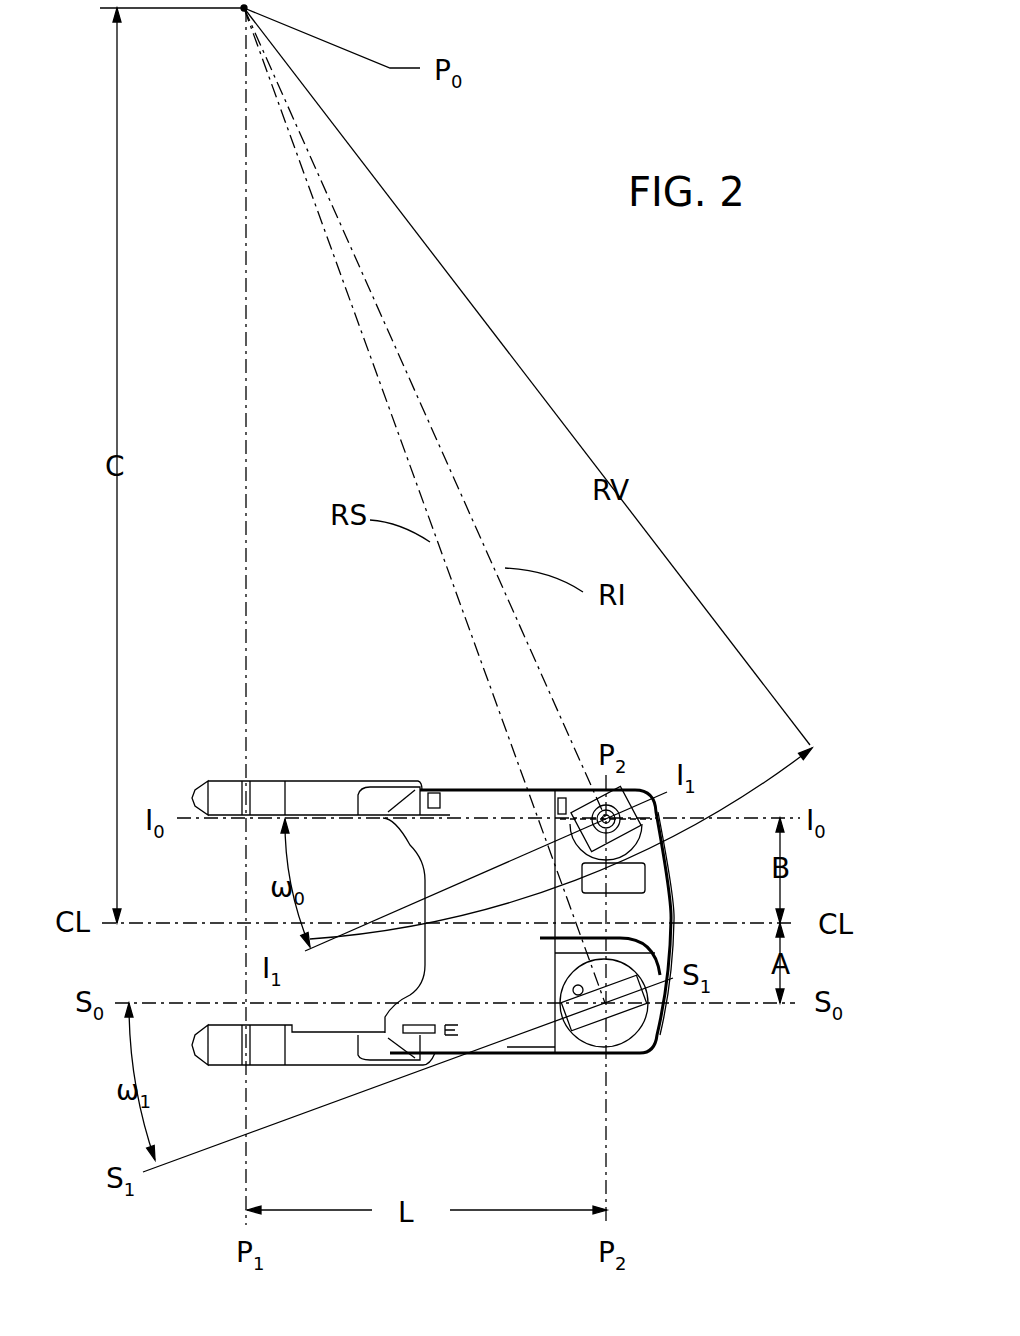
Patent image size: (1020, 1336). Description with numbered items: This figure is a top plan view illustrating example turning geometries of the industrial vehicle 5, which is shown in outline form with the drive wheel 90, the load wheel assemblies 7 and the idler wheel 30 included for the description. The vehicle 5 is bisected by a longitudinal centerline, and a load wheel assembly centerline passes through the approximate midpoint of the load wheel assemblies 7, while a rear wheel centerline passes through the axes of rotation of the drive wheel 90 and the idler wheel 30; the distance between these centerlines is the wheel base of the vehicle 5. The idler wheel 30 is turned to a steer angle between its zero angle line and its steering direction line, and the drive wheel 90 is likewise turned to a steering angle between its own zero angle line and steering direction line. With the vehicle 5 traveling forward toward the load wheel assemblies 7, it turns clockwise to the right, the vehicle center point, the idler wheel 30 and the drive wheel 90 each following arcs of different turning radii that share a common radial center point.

The industrial vehicle 5 is at (453, 765).
The load wheel assemblies 7 is at (228, 792).
The idler wheel 30 is at (633, 788).
The drive wheel 90 is at (650, 1053).